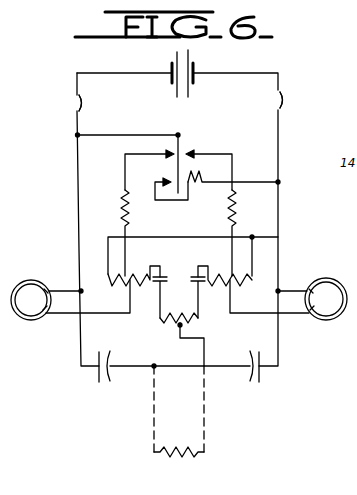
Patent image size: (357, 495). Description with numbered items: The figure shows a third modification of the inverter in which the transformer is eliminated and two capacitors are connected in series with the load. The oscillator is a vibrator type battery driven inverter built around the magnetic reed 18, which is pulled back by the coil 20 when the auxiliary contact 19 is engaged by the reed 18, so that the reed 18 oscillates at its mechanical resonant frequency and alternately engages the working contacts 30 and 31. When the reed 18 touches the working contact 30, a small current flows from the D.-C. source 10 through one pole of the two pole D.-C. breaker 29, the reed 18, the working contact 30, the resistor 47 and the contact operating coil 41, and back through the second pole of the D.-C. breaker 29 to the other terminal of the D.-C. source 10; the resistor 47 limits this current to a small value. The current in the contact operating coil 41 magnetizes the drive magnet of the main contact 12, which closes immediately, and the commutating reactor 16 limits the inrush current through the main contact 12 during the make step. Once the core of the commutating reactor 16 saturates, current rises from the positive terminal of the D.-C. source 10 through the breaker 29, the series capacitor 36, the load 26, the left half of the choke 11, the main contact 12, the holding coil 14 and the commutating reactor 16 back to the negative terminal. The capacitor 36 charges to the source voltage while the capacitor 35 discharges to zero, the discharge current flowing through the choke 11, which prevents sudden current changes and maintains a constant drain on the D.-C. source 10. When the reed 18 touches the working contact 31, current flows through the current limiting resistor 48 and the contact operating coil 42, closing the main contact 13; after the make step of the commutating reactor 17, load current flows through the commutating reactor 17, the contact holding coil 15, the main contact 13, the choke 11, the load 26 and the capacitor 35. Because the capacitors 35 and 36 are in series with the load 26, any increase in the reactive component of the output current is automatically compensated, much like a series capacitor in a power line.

The D.-C. source 10 is at (198, 59).
The choke 11 is at (185, 329).
The main contact 12 is at (164, 287).
The main contact 13 is at (200, 287).
The holding coil 14 is at (144, 266).
The contact holding coil 15 is at (225, 259).
The commutating reactor 16 is at (27, 328).
The commutating reactor 17 is at (326, 321).
The magnetic reed 18 is at (182, 137).
The auxiliary contact 19 is at (170, 184).
The coil 20 is at (197, 187).
The load 26 is at (180, 458).
The two pole D.-C. breaker 29 is at (90, 103).
The working contact 30 is at (166, 158).
The working contact 31 is at (191, 157).
The capacitor 35 is at (97, 385).
The series capacitor 36 is at (264, 380).
The contact operating coil 41 is at (108, 287).
The contact operating coil 42 is at (254, 280).
The resistor 47 is at (121, 209).
The current limiting resistor 48 is at (241, 209).